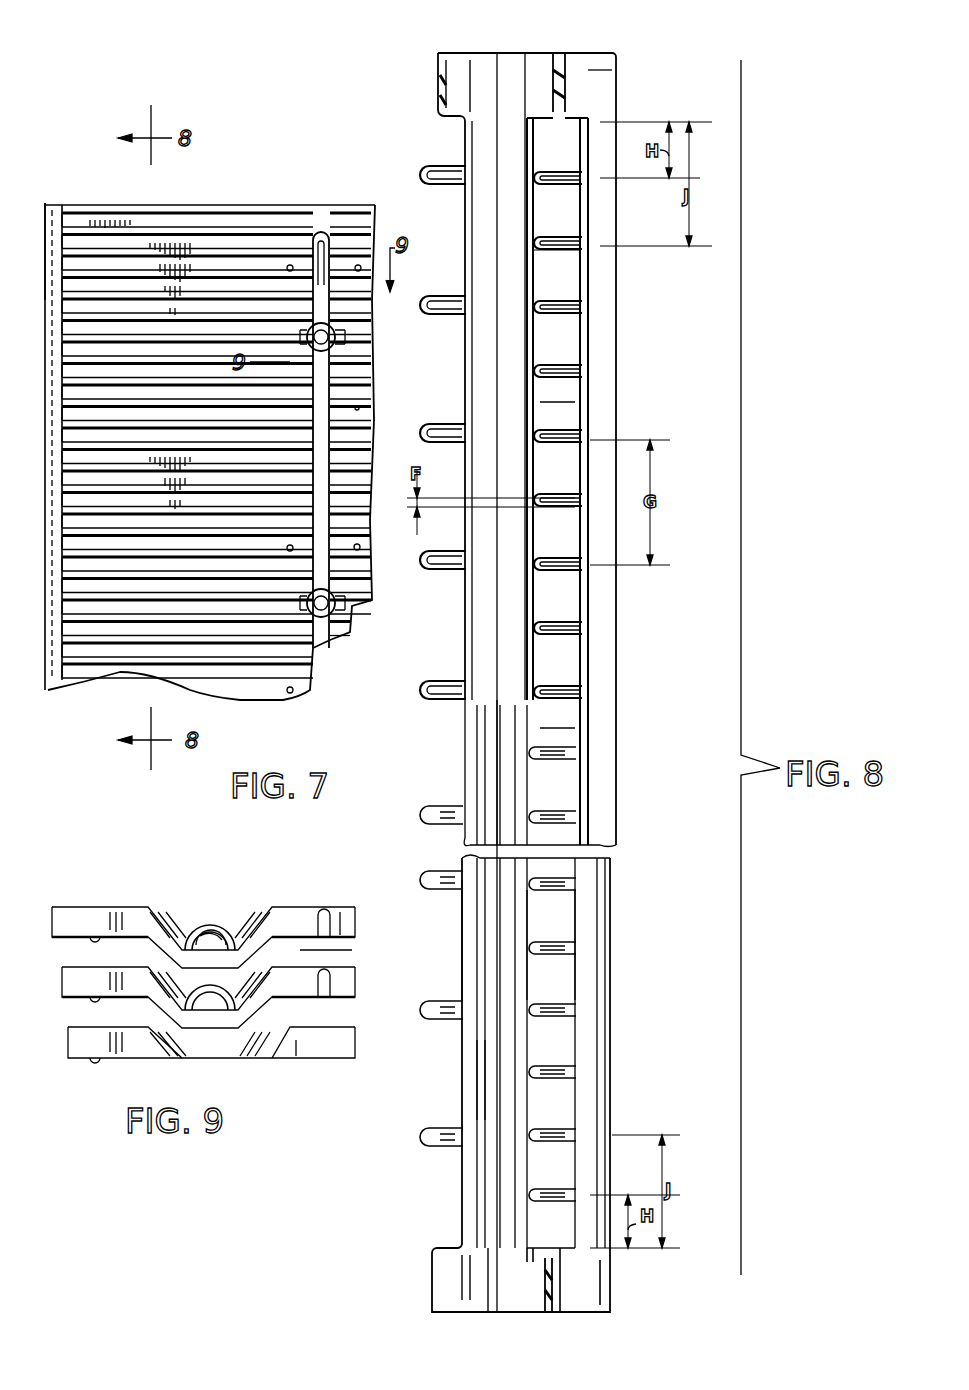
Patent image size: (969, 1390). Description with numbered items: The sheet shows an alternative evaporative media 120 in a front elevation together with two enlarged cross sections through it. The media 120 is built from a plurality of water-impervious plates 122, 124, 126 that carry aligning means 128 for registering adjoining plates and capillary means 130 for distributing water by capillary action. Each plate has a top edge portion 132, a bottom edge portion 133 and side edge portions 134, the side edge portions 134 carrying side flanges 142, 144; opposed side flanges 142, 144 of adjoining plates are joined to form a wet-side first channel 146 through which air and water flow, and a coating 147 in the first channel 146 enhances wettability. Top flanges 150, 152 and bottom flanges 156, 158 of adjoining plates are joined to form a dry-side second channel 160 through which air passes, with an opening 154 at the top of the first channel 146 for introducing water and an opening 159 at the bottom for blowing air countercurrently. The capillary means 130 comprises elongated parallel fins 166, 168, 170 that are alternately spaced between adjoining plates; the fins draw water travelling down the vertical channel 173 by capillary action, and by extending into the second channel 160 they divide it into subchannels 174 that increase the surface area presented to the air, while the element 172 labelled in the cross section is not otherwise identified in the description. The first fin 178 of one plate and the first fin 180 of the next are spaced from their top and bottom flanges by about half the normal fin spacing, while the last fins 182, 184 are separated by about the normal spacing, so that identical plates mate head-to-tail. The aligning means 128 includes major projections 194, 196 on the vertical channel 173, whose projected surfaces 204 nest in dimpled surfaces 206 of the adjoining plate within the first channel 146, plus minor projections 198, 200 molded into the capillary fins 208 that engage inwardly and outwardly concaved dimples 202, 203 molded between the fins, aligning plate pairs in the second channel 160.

In FIG. 7, the media 120 is at (272, 176).
In FIG. 8, the plate 122 is at (605, 114).
In FIG. 8, the plate 124 is at (532, 108).
In FIG. 8, the plate 126 is at (452, 126).
In FIG. 7, the aligning means 128 is at (290, 258).
In FIG. 8, the capillary means 130 is at (598, 312).
In FIG. 7, the top edge portion 132 is at (190, 204).
In FIG. 8, the top edge portion 132 is at (622, 56).
In FIG. 8, the bottom edge portion 133 is at (460, 1313).
In FIG. 7, the side edge portion 134 is at (52, 205).
In FIG. 8, the side edge portion 134 is at (450, 902).
In FIG. 8, the side flange 142 is at (488, 1102).
In FIG. 8, the side flange 144 is at (495, 1090).
In FIG. 8, the first channel 146 is at (482, 710).
In FIG. 9, the first channel 146 is at (346, 949).
In FIG. 8, the coating 147 is at (592, 602).
In FIG. 9, the coating 147 is at (280, 935).
In FIG. 8, the top flange 150 is at (600, 70).
In FIG. 8, the top flange 152 is at (548, 68).
In FIG. 8, the opening 154 is at (468, 88).
In FIG. 8, the bottom flange 156 is at (590, 1272).
In FIG. 8, the bottom flange 158 is at (548, 1300).
In FIG. 8, the opening 159 is at (480, 1300).
In FIG. 8, the second channel 160 is at (554, 658).
In FIG. 8, the fin 166 is at (575, 428).
In FIG. 8, the fin 168 is at (562, 402).
In FIG. 8, the fin 170 is at (455, 186).
In FIG. 8, the fin bend 172 is at (592, 690).
In FIG. 7, the vertical channel 173 is at (325, 230).
In FIG. 8, the subchannel 174 is at (565, 726).
In FIG. 8, the first fin 178 is at (552, 186).
In FIG. 8, the first fin 180 is at (565, 1188).
In FIG. 8, the last fin 182 is at (560, 1080).
In FIG. 8, the last fin 184 is at (556, 252).
In FIG. 7, the major projection 194 is at (330, 337).
In FIG. 7, the major projection 196 is at (328, 608).
In FIG. 9, the minor projection 198 is at (325, 912).
In FIG. 9, the minor projection 200 is at (95, 980).
In FIG. 7, the dimple 202 is at (362, 266).
In FIG. 9, the dimple 202 is at (305, 1046).
In FIG. 7, the dimple 203 is at (290, 355).
In FIG. 9, the dimple 203 is at (98, 932).
In FIG. 9, the projected surface 204 is at (205, 928).
In FIG. 9, the dimpled surface 206 is at (223, 925).
In FIG. 9, the capillary fin 208 is at (345, 926).